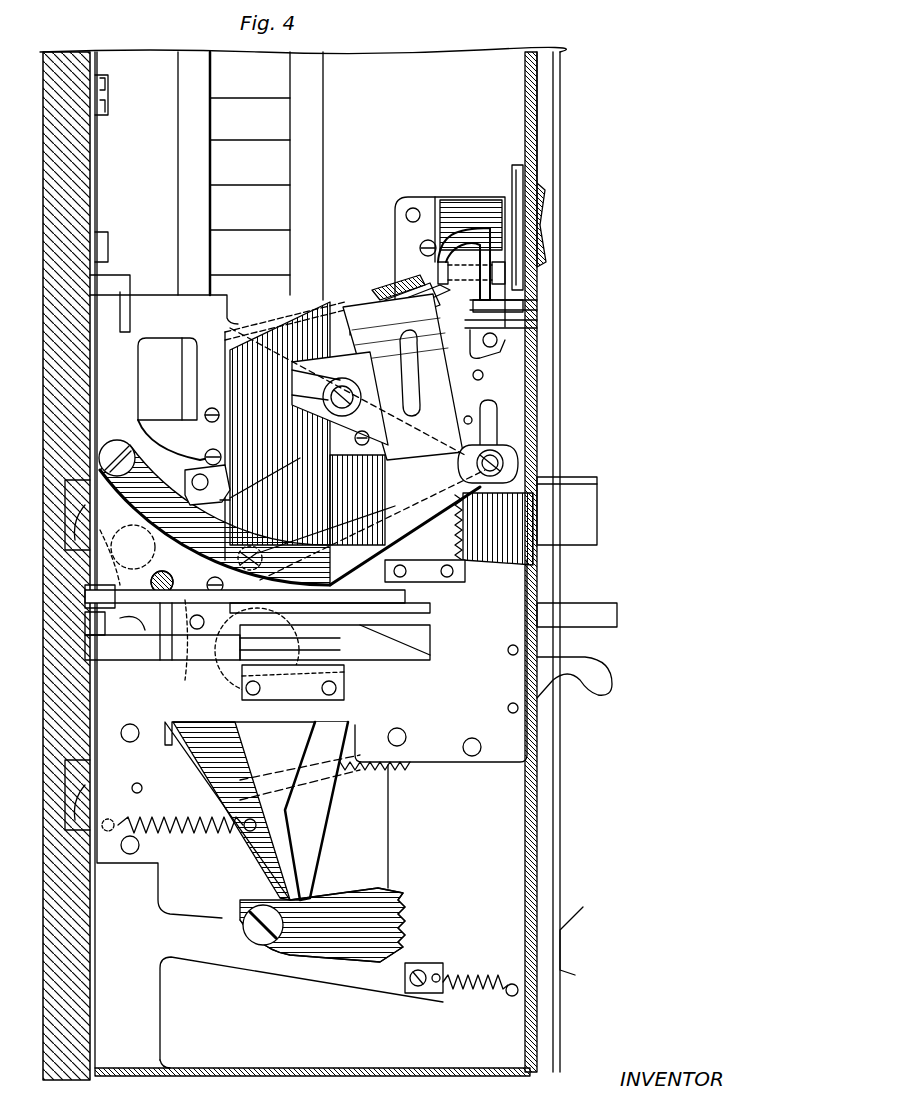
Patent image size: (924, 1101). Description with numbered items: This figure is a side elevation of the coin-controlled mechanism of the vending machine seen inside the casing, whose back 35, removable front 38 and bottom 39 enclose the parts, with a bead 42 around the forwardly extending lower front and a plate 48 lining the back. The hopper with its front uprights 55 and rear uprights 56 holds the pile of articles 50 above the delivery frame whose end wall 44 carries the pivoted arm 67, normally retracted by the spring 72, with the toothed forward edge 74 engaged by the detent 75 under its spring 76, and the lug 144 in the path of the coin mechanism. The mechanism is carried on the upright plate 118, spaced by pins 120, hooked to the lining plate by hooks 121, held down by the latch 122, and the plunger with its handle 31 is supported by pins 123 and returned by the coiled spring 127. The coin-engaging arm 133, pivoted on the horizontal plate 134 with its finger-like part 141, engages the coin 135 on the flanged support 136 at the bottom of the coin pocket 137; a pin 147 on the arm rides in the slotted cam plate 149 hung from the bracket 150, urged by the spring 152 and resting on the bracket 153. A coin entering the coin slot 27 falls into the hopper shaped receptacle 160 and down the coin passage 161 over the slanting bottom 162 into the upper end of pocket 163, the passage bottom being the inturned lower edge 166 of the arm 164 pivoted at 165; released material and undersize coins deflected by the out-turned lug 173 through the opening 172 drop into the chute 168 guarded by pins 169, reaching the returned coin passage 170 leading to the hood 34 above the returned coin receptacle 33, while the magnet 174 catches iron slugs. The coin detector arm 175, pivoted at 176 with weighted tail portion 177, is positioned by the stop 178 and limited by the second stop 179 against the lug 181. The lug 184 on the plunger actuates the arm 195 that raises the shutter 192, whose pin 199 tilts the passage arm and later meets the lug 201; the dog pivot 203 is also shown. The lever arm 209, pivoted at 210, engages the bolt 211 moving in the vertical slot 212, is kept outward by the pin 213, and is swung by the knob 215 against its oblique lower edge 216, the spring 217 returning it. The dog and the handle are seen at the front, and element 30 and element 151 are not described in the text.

The coin slot 27 is at (542, 222).
The bracket 30 is at (585, 930).
The handle 31 is at (600, 678).
The returned coin receptacle 33 is at (590, 603).
The hood 34 is at (578, 497).
The back 35 is at (70, 1020).
The removable front 38 is at (538, 782).
The bottom 39 is at (318, 1066).
The bead 42 is at (560, 740).
The end wall 44 is at (390, 828).
The plate 48 is at (98, 950).
The articles 50 is at (270, 253).
The front uprights 55 is at (307, 140).
The rear uprights 56 is at (192, 126).
The arm 67 is at (228, 756).
The spring 72 is at (200, 840).
The toothed forward edge 74 is at (405, 910).
The detent 75 is at (420, 968).
The spring 76 is at (485, 978).
The upright plate 118 is at (496, 756).
The pins 120 is at (130, 733).
The hooks 121 is at (75, 536).
The latch 122 is at (100, 212).
The pins 123 is at (511, 655).
The coiled spring 127 is at (400, 768).
The coin-engaging arm 133 is at (170, 675).
The horizontal plate 134 is at (130, 662).
The coin 135 is at (280, 700).
The flanged support 136 is at (300, 690).
The coin pocket 137 is at (236, 518).
The finger-like part 141 is at (330, 641).
The lug 144 is at (182, 649).
The pin 147 is at (140, 650).
The cam plate 149 is at (405, 597).
The bracket 150 is at (104, 549).
The hole 151 is at (150, 776).
The spring 152 is at (122, 575).
The bracket 153 is at (395, 610).
The hopper shaped receptacle 160 is at (500, 188).
The coin passage 161 is at (338, 320).
The slanting bottom 162 is at (462, 362).
The upper end of pocket 163 is at (243, 336).
The arm 164 is at (455, 290).
The pivot 165 is at (445, 244).
The inturned lower edge 166 is at (520, 356).
The chute 168 is at (403, 377).
The pins 169 is at (462, 415).
The returned coin passage 170 is at (606, 521).
The opening 172 is at (395, 318).
The out-turned lug 173 is at (398, 300).
The magnet 174 is at (300, 375).
The arm 175 is at (258, 425).
The pivot 176 is at (213, 448).
The weighted tail portion 177 is at (202, 466).
The stop 178 is at (232, 497).
The second stop 179 is at (196, 495).
The lug 181 is at (170, 424).
The lug 184 is at (248, 665).
The shutter 192 is at (510, 305).
The arm 195 is at (315, 590).
The pin 199 is at (510, 320).
The lug 201 is at (500, 318).
The pivot 203 is at (484, 730).
The lever arm 209 is at (290, 527).
The pivot 210 is at (121, 452).
The bolt 211 is at (503, 457).
The vertical slot 212 is at (495, 432).
The pin 213 is at (262, 558).
The knob 215 is at (187, 580).
The oblique lower edge 216 is at (326, 529).
The spring 217 is at (445, 515).